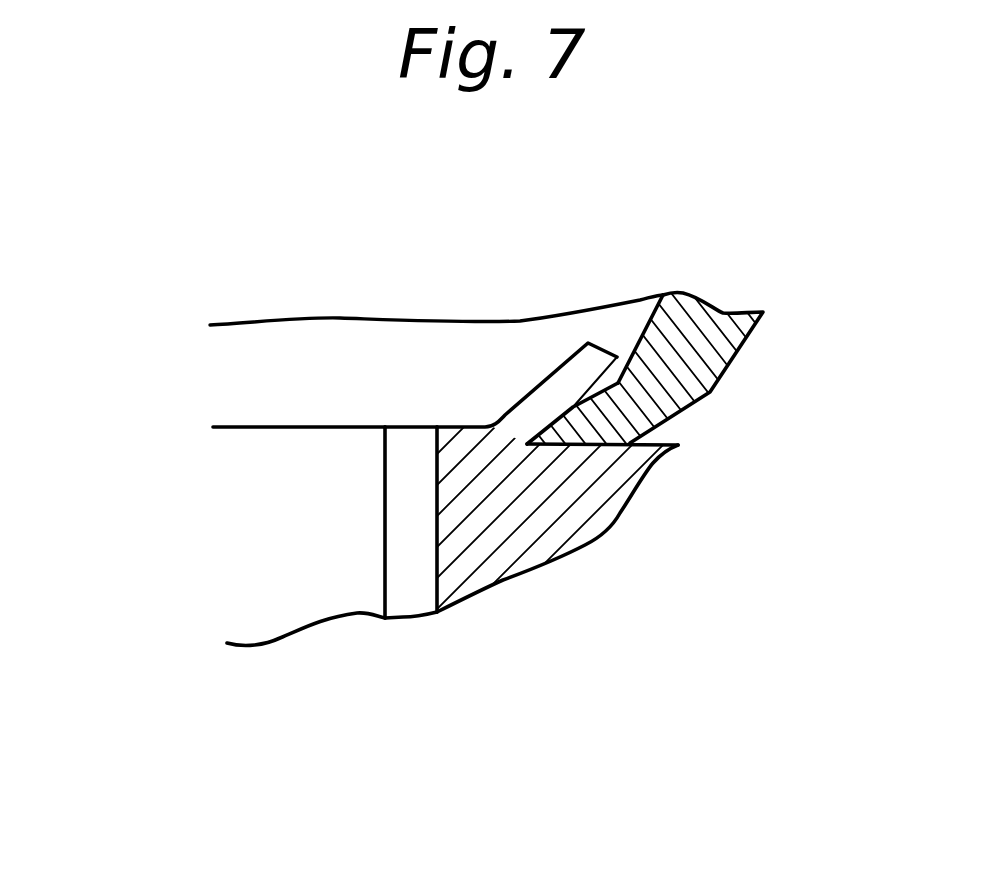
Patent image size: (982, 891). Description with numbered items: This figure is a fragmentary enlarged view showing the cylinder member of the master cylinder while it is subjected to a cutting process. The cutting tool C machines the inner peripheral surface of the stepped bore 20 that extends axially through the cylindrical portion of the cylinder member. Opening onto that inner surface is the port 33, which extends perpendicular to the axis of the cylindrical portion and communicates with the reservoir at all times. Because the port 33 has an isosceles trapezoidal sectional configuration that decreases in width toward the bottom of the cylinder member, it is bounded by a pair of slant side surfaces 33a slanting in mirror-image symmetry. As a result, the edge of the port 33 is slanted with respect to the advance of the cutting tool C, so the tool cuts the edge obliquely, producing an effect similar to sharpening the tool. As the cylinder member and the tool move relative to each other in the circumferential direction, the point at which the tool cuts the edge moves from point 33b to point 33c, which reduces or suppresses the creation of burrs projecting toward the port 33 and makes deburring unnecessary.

The stepped bore 20 is at (518, 357).
The cutting tool C is at (733, 360).
The port 33 is at (283, 450).
The slant side surfaces 33a is at (400, 486).
The point 33b is at (443, 428).
The point 33c is at (378, 428).